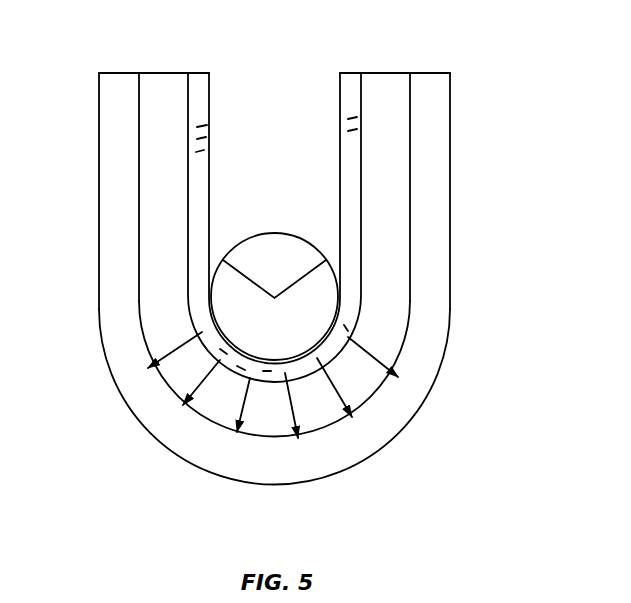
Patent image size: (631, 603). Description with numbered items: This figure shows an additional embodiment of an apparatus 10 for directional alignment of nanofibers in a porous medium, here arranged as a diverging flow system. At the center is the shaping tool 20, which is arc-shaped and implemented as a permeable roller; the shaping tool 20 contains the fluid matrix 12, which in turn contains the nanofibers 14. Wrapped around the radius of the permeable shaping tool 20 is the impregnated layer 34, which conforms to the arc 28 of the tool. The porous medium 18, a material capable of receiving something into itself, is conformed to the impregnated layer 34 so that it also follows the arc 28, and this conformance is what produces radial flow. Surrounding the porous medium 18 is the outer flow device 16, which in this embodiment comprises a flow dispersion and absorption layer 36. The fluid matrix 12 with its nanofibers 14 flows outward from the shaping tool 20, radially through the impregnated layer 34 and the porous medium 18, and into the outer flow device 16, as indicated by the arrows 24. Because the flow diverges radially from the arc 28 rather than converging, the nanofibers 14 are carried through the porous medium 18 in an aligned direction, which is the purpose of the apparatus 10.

The apparatus 10 is at (505, 61).
The fluid matrix 12 is at (348, 77).
The nanofibers 14 is at (197, 138).
The outer flow device 16 is at (375, 453).
The porous medium 18 is at (153, 165).
The shaping tool 20 is at (277, 222).
The arrows 24 is at (163, 355).
The arc 28 is at (328, 253).
The impregnated layer 34 is at (202, 97).
The flow dispersion and absorption layer 36 is at (117, 240).